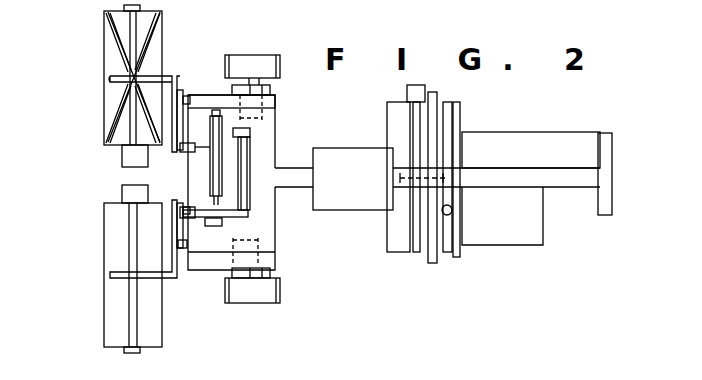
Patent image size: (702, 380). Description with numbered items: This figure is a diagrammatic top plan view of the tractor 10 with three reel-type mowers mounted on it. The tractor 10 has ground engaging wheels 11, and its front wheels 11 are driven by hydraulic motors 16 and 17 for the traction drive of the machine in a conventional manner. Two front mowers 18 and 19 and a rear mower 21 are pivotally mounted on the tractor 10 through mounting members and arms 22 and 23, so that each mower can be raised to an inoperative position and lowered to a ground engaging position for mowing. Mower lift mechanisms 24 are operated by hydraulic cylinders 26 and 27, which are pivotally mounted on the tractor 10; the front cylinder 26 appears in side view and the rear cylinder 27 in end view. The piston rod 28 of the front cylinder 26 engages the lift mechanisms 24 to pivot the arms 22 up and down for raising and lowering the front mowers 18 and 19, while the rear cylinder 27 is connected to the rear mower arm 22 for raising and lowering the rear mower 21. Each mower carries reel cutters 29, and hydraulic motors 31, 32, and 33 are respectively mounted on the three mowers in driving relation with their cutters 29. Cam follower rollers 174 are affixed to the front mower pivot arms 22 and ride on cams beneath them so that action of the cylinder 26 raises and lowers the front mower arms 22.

The tractor 10 is at (525, 124).
The ground engaging wheels 11 is at (280, 62).
The hydraulic motor 16 is at (283, 112).
The hydraulic motor 17 is at (277, 241).
The reel-type mower 18 is at (106, 128).
The reel-type mower 19 is at (104, 237).
The rear mower 21 is at (402, 245).
The mower support arms 22 is at (180, 92).
The mounting arms 23 is at (166, 76).
The mower lift mechanisms 24 is at (188, 100).
The front hydraulic cylinder 26 is at (210, 166).
The rear hydraulic cylinder 27 is at (455, 210).
The piston rod 28 is at (215, 189).
The cutters 29 is at (110, 40).
The hydraulic motor 31 is at (122, 162).
The hydraulic motor 32 is at (120, 190).
The hydraulic motor 33 is at (432, 86).
The cam follower rollers 174 is at (190, 248).